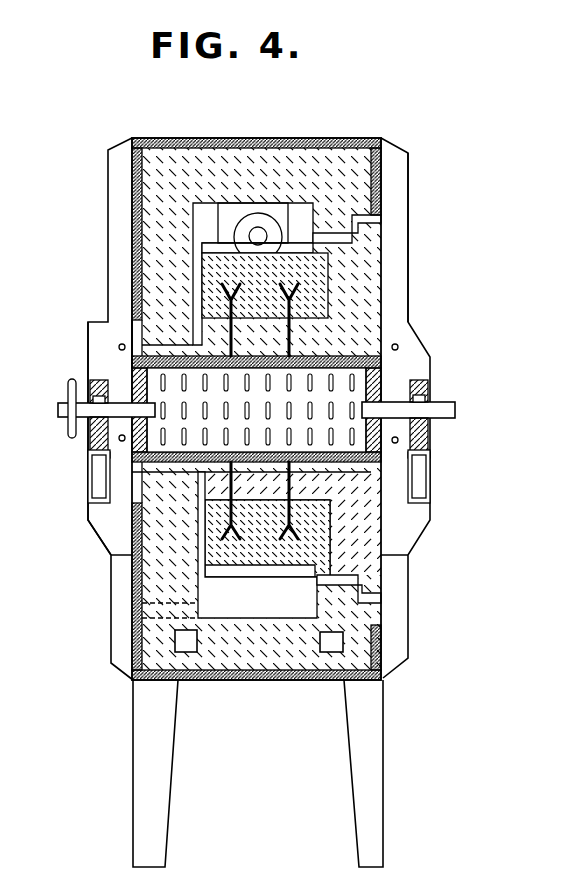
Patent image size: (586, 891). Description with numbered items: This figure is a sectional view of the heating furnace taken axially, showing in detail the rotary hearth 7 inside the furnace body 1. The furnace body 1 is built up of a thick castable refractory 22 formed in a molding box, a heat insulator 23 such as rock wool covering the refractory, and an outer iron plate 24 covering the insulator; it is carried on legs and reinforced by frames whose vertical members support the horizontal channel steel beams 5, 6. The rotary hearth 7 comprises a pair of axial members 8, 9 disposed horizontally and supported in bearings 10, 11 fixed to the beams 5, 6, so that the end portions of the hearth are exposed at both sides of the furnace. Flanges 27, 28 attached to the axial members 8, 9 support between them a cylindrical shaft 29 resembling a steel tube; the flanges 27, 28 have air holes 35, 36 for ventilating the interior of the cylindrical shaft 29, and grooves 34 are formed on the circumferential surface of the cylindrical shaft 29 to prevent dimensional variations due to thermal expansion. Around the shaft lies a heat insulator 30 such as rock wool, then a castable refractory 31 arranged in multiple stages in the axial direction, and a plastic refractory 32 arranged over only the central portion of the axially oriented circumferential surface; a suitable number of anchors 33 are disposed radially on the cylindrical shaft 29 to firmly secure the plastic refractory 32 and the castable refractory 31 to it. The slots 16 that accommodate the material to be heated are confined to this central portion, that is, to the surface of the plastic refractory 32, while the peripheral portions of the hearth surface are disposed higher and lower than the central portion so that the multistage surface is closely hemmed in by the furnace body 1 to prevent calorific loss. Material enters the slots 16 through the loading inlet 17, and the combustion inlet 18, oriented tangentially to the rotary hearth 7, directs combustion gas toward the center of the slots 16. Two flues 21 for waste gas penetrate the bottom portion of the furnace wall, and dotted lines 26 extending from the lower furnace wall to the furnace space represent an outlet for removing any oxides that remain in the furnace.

The furnace body 1 is at (384, 151).
The channel steel beam 5 is at (412, 480).
The channel steel beam 6 is at (87, 522).
The rotary hearth 7 is at (383, 233).
The axial member 8 is at (440, 408).
The axial member 9 is at (74, 412).
The bearing 10 is at (428, 435).
The bearing 11 is at (95, 434).
The slot 16 is at (217, 249).
The loading inlet 17 is at (137, 222).
The combustion inlet 18 is at (259, 236).
The flue 21 is at (188, 641).
The castable refractory 22 is at (297, 165).
The heat insulator 23 is at (233, 143).
The iron plate 24 is at (172, 143).
The outlet for oxides 26 is at (150, 620).
The flange 27 is at (131, 370).
The flange 28 is at (383, 372).
The cylindrical shaft 29 is at (348, 463).
The heat insulator 30 is at (133, 460).
The castable refractory 31 is at (350, 281).
The plastic refractory 32 is at (217, 268).
The electrodes 33 is at (231, 526).
The groove 34 is at (247, 405).
The air hole 35 is at (134, 380).
The air hole 36 is at (382, 384).